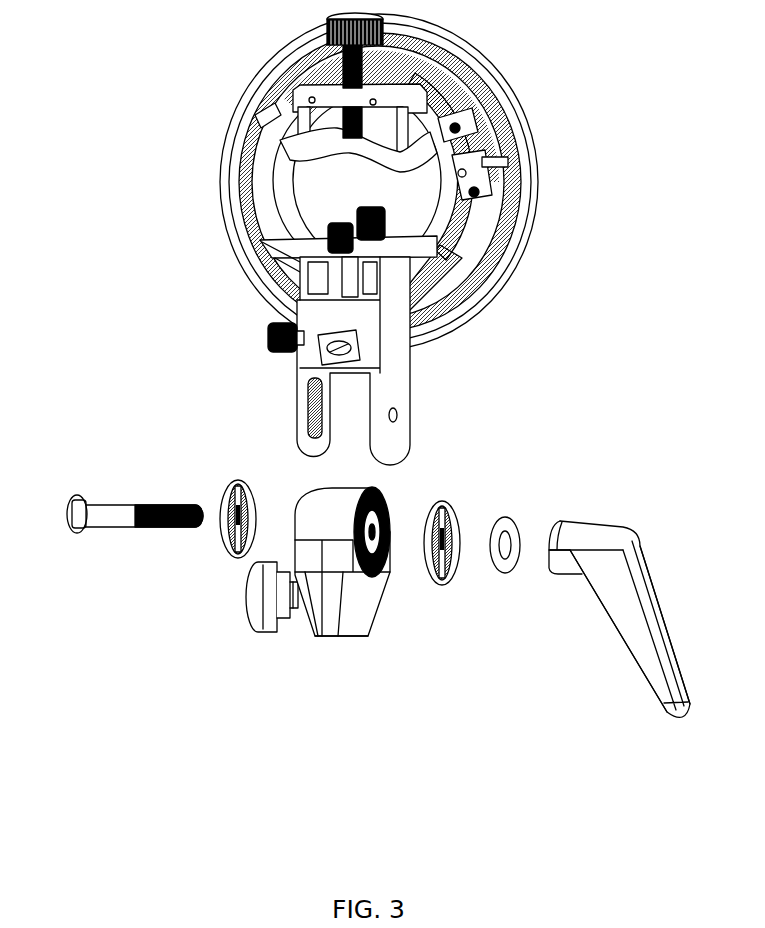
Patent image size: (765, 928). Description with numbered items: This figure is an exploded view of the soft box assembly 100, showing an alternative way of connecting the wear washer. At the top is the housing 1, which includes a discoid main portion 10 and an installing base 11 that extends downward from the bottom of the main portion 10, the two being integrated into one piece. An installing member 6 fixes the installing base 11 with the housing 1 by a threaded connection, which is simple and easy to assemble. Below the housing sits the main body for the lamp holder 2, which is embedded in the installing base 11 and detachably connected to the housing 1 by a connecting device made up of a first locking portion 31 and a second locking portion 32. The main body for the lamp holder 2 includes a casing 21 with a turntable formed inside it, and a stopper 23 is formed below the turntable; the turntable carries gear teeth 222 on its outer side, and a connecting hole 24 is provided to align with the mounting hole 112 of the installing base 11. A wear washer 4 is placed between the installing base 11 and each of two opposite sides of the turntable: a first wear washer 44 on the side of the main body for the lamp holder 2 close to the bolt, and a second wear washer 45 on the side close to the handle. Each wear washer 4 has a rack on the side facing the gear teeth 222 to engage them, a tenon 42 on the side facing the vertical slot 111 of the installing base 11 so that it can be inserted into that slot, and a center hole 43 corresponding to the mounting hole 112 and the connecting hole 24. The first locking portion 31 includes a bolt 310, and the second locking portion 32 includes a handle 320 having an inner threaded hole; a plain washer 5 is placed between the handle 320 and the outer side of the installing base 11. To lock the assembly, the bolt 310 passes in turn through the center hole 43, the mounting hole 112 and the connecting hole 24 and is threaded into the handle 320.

The mounting device 100 is at (389, 239).
The main portion 10 is at (447, 72).
The housing 1 is at (432, 143).
The installing base 11 is at (334, 336).
The vertical slot 111 is at (310, 382).
The mounting hole 112 is at (400, 415).
The installing member 6 is at (270, 332).
The main body for a lamp holder 2 is at (287, 604).
The casing 21 is at (323, 505).
The gear teeth 222 is at (368, 640).
The connecting hole 24 is at (384, 535).
The stopper 23 is at (262, 634).
The first locking portion 31 is at (127, 583).
The bolt 310 is at (79, 583).
The wear washer 4 is at (436, 596).
The tenon 42 is at (447, 587).
The center hole 43 is at (241, 557).
The first wear washer 44 is at (201, 639).
The second wear washer 45 is at (437, 588).
The plain washer 5 is at (503, 575).
The second locking portion 32 is at (619, 601).
The handle 320 is at (643, 620).